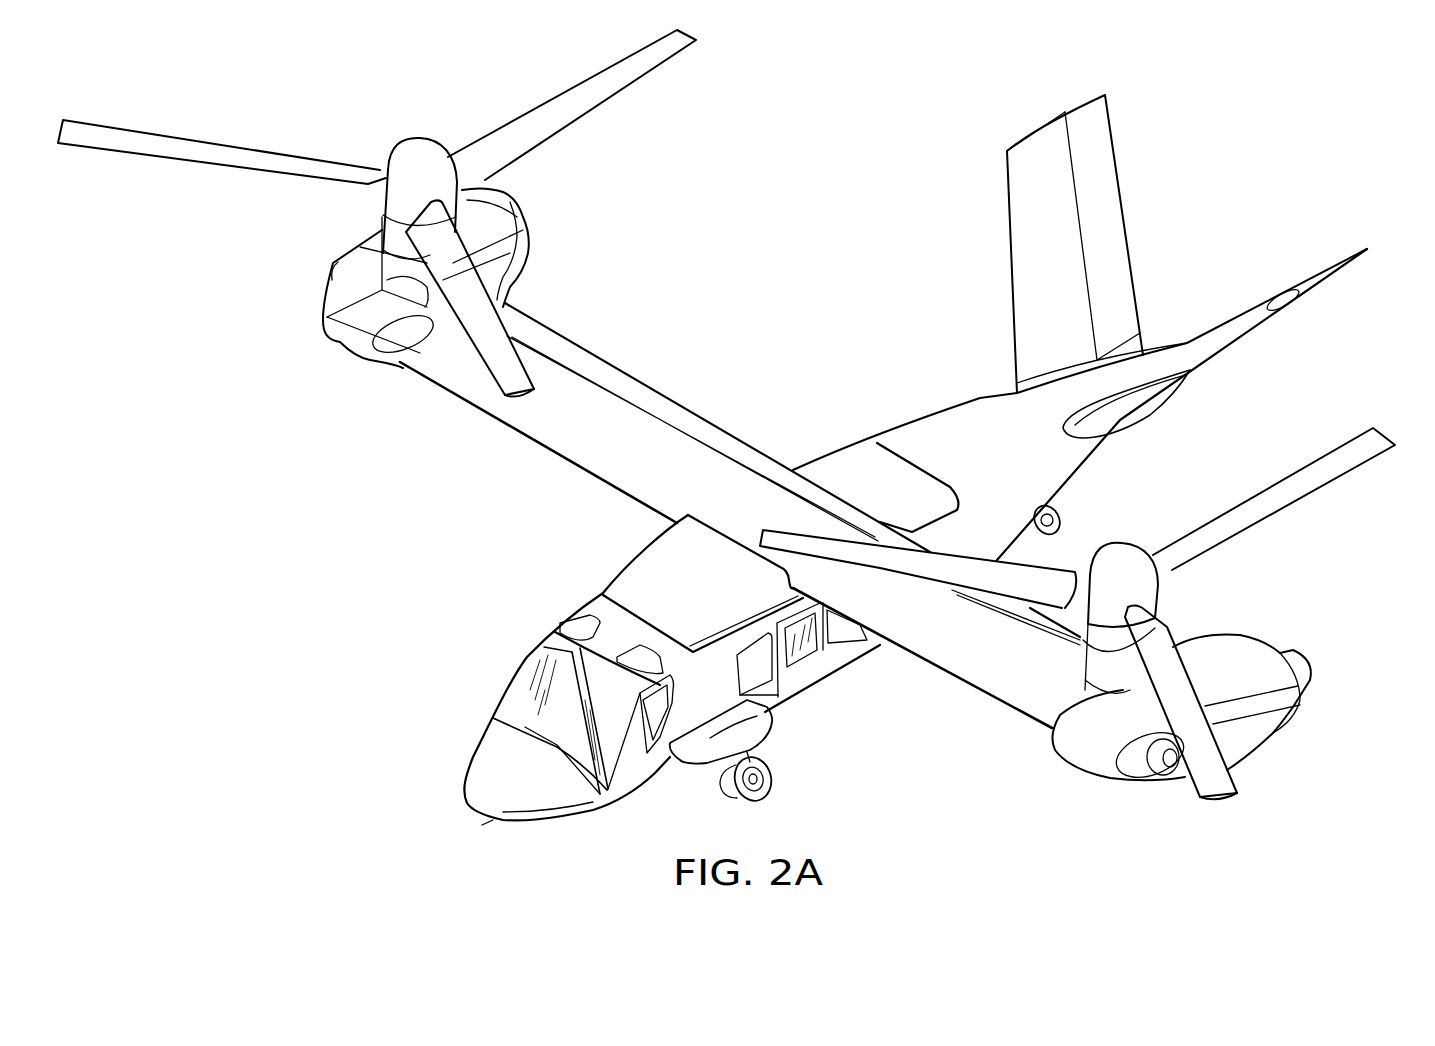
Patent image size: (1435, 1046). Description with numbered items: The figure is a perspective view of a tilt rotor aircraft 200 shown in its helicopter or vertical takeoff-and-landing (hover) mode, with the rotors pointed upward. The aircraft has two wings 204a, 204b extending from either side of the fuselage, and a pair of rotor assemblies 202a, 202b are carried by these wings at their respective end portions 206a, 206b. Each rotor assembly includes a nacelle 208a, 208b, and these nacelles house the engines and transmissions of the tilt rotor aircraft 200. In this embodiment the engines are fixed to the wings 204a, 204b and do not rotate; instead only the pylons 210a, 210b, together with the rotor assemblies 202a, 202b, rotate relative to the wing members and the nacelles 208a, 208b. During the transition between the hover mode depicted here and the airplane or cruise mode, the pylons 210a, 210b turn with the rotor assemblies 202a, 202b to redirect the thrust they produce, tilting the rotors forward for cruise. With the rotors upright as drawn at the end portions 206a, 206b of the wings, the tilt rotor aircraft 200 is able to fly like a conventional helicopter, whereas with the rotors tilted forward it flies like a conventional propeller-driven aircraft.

The tilt rotor aircraft 200 is at (1203, 74).
The rotor assembly 202a is at (563, 90).
The rotor assembly 202b is at (1350, 474).
The wing 204a is at (553, 440).
The wing 204b is at (948, 666).
The end portion of wing 206a is at (557, 221).
The end portion of wing 206b is at (1321, 650).
The nacelle 208a is at (341, 332).
The nacelle 208b is at (1259, 718).
The pylon 210a is at (388, 225).
The pylon 210b is at (1082, 647).